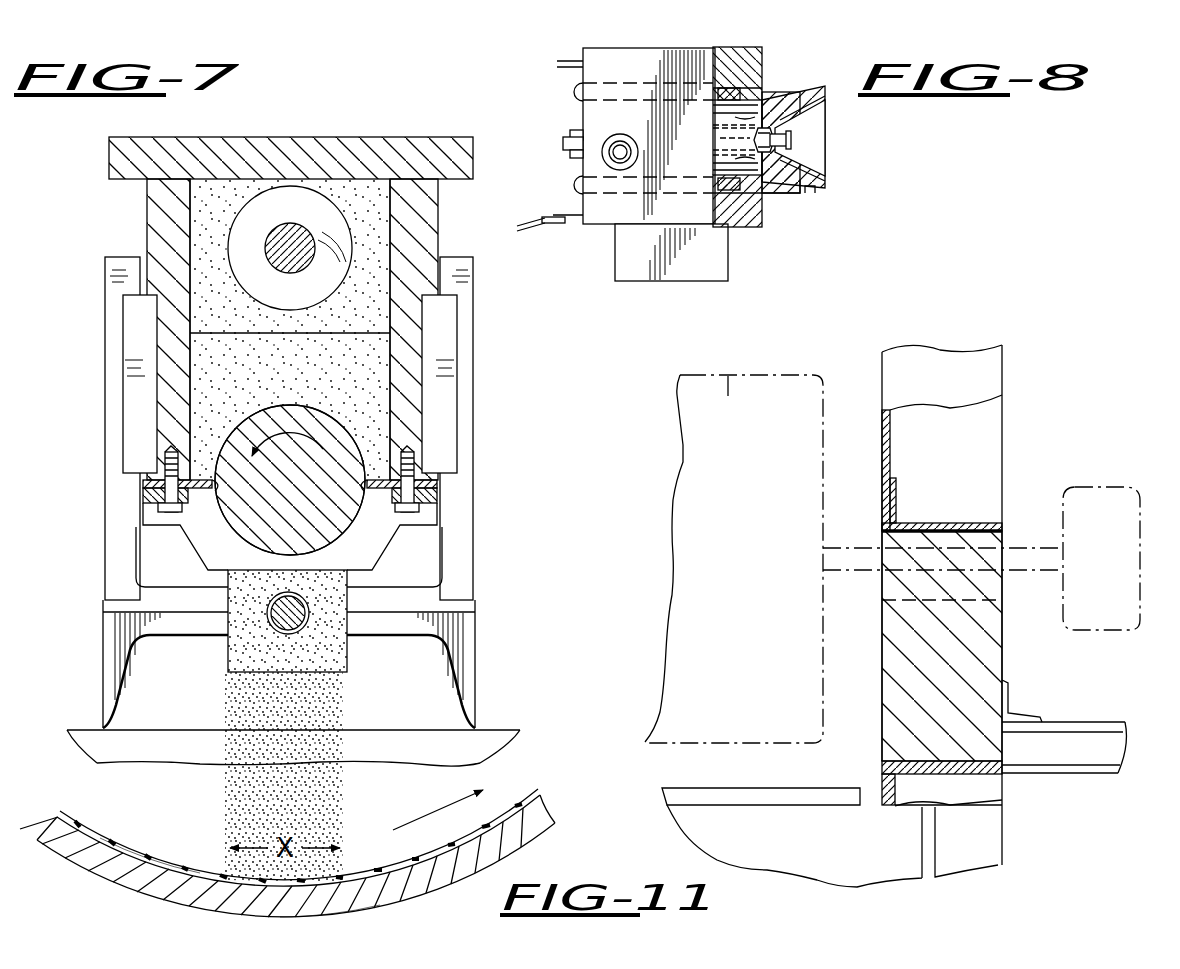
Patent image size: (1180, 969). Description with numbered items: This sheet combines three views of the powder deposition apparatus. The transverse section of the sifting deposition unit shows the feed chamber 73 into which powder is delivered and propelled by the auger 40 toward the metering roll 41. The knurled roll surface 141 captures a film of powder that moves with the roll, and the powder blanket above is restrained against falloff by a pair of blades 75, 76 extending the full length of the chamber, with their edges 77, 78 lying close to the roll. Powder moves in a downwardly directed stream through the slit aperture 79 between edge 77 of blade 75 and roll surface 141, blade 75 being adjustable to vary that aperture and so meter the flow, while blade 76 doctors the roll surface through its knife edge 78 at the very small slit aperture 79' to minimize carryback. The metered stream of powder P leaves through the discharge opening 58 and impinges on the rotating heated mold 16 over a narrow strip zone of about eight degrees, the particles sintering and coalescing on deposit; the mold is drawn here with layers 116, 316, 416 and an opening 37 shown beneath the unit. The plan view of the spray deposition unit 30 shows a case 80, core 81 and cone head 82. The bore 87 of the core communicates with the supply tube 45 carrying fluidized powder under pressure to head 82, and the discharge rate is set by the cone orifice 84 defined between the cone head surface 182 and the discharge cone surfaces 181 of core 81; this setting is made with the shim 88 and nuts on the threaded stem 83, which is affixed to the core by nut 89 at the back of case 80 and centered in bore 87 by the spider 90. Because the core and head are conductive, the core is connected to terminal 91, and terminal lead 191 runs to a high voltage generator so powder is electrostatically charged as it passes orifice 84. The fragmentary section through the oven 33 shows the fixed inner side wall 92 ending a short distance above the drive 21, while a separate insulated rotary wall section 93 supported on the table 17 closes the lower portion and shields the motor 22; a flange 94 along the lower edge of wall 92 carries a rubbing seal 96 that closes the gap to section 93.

In FIG. 7, the feed chamber 73 is at (388, 382).
In FIG. 7, the auger 40 is at (260, 223).
In FIG. 7, the metering roll 41 is at (303, 432).
In FIG. 7, the discharge opening 58 is at (225, 552).
In FIG. 7, the knurled roll surface 141 is at (213, 487).
In FIG. 7, the blade 75 is at (143, 488).
In FIG. 7, the blade 76 is at (390, 494).
In FIG. 7, the blade edge 77 is at (205, 485).
In FIG. 7, the knife edge 78 is at (374, 485).
In FIG. 7, the slit aperture 79 is at (199, 506).
In FIG. 7, the slit aperture 79' is at (383, 506).
In FIG. 7, the discharge aperture 37 is at (327, 745).
In FIG. 7, the stream of powder P is at (323, 778).
In FIG. 7, the mold 16 is at (412, 872).
In FIG. 11, the mold 16 is at (727, 370).
In FIG. 7, the belt base layer 116 is at (388, 897).
In FIG. 7, the belt surface layer 316 is at (374, 878).
In FIG. 7, the belt intermediate layer 416 is at (167, 868).
In FIG. 8, the spray deposition unit 30 is at (688, 44).
In FIG. 8, the supply tube 45 is at (615, 142).
In FIG. 8, the nut 89 is at (577, 157).
In FIG. 8, the terminal 91 is at (558, 214).
In FIG. 8, the terminal lead 191 is at (530, 224).
In FIG. 8, the case 80 is at (748, 58).
In FIG. 8, the core 81 is at (755, 95).
In FIG. 8, the spider 90 is at (748, 121).
In FIG. 8, the threaded stem 83 is at (740, 139).
In FIG. 8, the bore 87 is at (750, 160).
In FIG. 8, the discharge cone surfaces 181 is at (783, 172).
In FIG. 8, the cone head surface 182 is at (813, 183).
In FIG. 8, the cone head 82 is at (814, 122).
In FIG. 8, the cone orifice 84 is at (767, 113).
In FIG. 8, the shim 88 is at (795, 139).
In FIG. 11, the drive 21 is at (1037, 557).
In FIG. 11, the motor 22 is at (1097, 491).
In FIG. 11, the wall section 93 is at (975, 642).
In FIG. 11, the oven inner side wall 92 is at (887, 458).
In FIG. 11, the flange 94 is at (933, 520).
In FIG. 11, the rubbing seal 96 is at (997, 527).
In FIG. 11, the oven 33 is at (774, 777).
In FIG. 11, the table 17 is at (1070, 718).